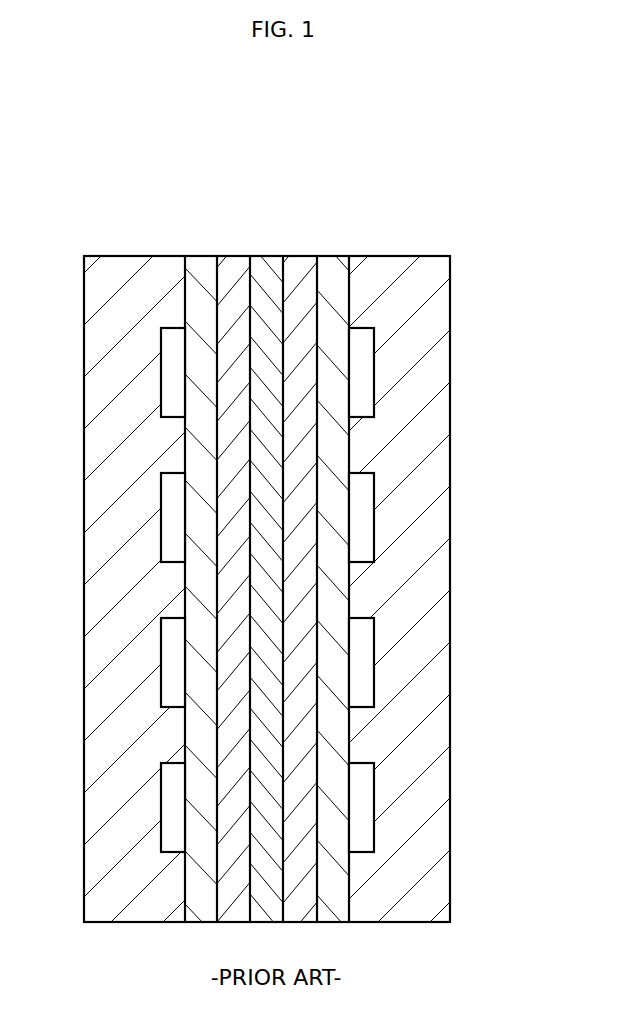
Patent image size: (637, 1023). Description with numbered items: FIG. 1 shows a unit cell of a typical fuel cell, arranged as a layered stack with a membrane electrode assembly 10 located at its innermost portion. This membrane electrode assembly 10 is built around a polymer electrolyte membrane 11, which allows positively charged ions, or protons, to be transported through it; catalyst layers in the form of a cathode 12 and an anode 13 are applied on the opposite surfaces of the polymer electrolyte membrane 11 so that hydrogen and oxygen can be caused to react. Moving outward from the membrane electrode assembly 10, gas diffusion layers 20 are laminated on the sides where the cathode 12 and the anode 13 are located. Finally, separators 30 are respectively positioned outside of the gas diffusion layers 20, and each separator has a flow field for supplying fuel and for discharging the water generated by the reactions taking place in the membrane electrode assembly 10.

The membrane electrode assembly 10 is at (205, 132).
The polymer electrolyte membrane 11 is at (265, 256).
The cathode 12 is at (237, 256).
The anode 13 is at (300, 256).
The gas diffusion layers 20 is at (200, 256).
The separators 30 is at (113, 256).